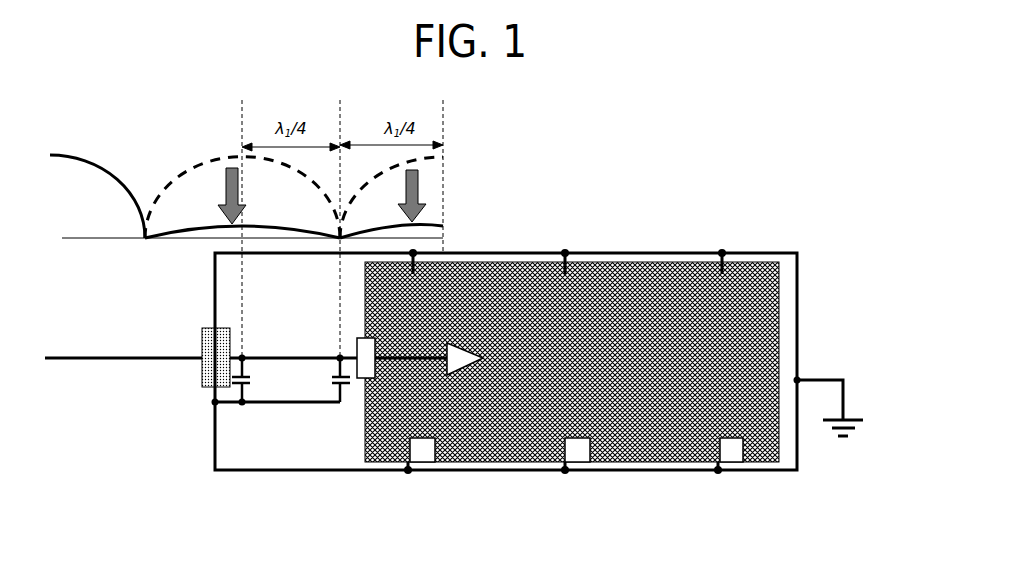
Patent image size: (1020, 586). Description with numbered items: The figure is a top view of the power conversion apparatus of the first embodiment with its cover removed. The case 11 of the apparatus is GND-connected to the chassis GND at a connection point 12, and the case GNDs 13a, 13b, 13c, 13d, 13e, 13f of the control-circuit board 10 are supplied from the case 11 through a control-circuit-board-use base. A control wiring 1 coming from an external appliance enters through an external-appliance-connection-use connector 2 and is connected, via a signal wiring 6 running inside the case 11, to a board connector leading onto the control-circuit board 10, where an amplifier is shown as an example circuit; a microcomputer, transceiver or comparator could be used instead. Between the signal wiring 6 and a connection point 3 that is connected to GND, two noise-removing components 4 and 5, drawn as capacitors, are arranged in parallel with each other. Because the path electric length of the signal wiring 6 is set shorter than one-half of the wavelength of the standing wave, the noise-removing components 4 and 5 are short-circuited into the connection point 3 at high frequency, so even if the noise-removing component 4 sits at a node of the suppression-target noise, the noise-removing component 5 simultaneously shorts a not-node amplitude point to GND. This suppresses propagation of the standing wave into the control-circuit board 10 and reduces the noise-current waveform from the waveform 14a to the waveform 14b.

The control wiring 1 is at (123, 362).
The external-appliance-connection-use connector 2 is at (202, 387).
The connection point 3 is at (215, 402).
The noise-removing component 4 is at (258, 405).
The noise-removing component 5 is at (333, 407).
The signal wiring 6 is at (272, 353).
The control-circuit board 10 is at (770, 253).
The case 11 is at (645, 475).
The connection point 12 is at (845, 410).
The case GND 13a is at (430, 253).
The case GND 13b is at (565, 253).
The case GND 13c is at (722, 253).
The case GND 13d is at (408, 470).
The case GND 13e is at (565, 470).
The case GND 13f is at (718, 470).
The waveform 14a is at (443, 150).
The waveform 14b is at (443, 227).